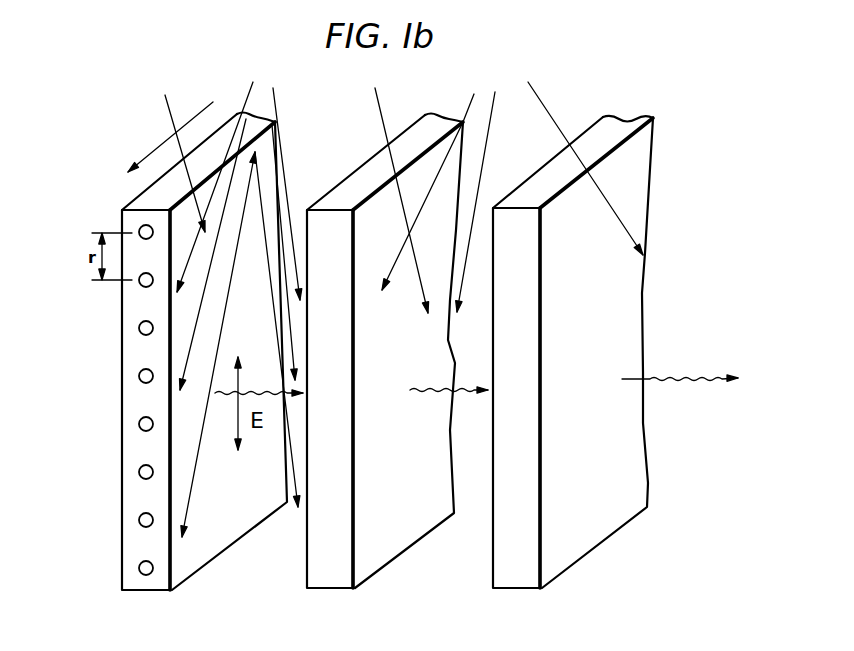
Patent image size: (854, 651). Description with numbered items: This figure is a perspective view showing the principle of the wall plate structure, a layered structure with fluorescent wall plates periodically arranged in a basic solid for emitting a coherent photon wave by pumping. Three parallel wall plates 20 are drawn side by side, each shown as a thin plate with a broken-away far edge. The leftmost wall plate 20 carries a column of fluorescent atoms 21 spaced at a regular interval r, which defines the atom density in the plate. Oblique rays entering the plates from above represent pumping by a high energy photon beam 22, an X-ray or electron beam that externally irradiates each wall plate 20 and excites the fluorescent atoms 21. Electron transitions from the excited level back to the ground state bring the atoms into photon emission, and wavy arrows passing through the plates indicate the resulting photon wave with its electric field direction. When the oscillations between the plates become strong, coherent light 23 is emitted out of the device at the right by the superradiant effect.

The wall plate 20 is at (143, 592).
The fluorescent atoms 21 is at (140, 573).
The pumping by a high energy photon beam 22 is at (290, 137).
The coherent light 23 is at (692, 381).